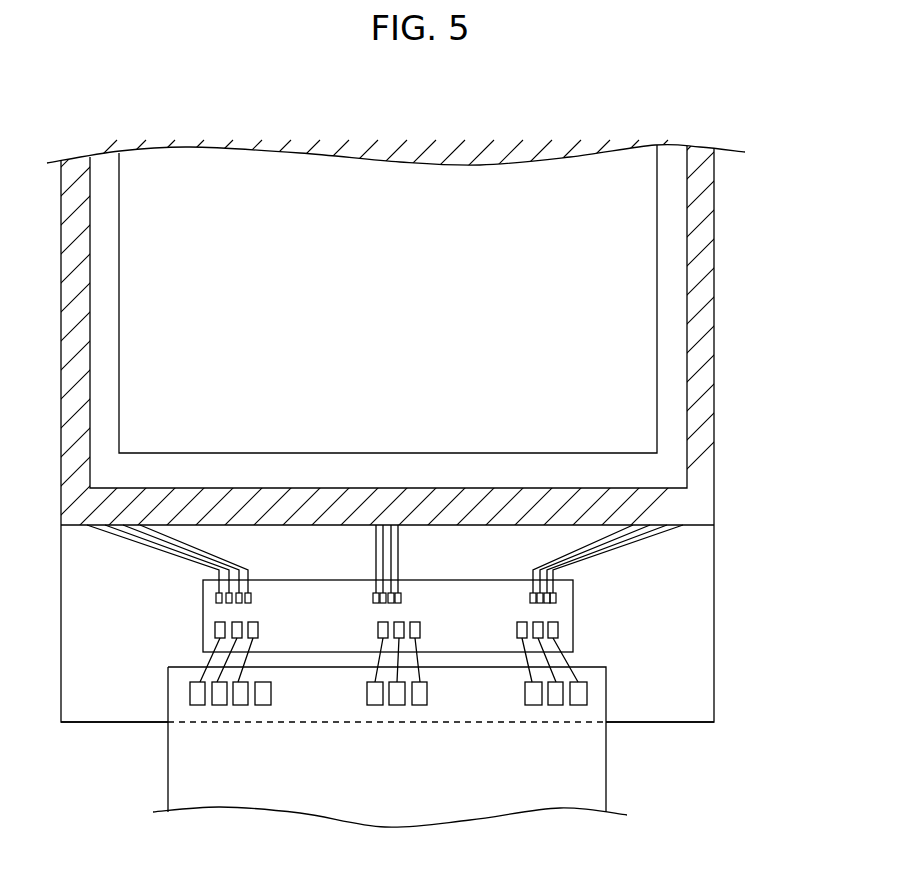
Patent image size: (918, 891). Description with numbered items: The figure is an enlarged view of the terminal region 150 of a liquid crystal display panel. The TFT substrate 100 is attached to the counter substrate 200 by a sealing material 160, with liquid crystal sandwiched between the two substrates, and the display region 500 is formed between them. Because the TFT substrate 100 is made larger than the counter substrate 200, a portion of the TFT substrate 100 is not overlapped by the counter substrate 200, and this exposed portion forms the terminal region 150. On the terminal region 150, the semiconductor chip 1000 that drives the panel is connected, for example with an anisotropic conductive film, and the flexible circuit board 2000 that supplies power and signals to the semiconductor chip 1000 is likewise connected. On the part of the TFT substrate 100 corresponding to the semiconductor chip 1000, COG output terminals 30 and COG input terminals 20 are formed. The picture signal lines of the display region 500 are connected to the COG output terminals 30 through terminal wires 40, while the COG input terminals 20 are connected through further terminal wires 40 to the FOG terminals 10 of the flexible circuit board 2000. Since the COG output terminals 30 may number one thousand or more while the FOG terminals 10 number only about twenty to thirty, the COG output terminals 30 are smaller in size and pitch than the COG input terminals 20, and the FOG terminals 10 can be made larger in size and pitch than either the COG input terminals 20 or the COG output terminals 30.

The FOG terminal 10 is at (188, 695).
The COG input terminal 20 is at (212, 630).
The COG output terminal 30 is at (205, 592).
The terminal wire 40 is at (140, 545).
The TFT substrate 100 is at (714, 605).
The terminal region 150 is at (675, 712).
The sealing material 160 is at (703, 489).
The counter substrate 200 is at (714, 415).
The display region 500 is at (640, 335).
The semiconductor chip 1000 is at (575, 612).
The flexible circuit board 2000 is at (606, 778).